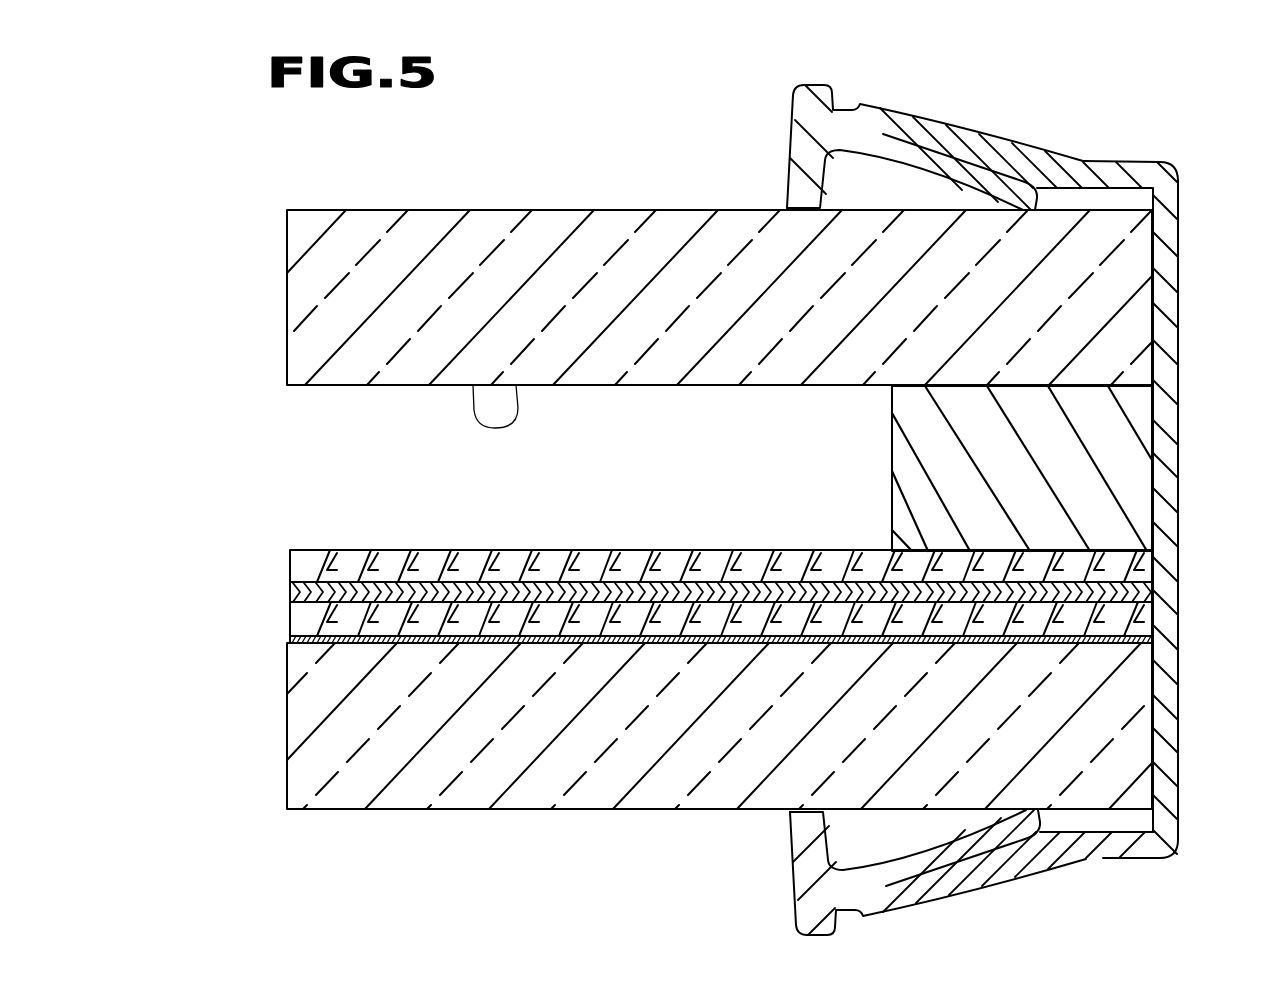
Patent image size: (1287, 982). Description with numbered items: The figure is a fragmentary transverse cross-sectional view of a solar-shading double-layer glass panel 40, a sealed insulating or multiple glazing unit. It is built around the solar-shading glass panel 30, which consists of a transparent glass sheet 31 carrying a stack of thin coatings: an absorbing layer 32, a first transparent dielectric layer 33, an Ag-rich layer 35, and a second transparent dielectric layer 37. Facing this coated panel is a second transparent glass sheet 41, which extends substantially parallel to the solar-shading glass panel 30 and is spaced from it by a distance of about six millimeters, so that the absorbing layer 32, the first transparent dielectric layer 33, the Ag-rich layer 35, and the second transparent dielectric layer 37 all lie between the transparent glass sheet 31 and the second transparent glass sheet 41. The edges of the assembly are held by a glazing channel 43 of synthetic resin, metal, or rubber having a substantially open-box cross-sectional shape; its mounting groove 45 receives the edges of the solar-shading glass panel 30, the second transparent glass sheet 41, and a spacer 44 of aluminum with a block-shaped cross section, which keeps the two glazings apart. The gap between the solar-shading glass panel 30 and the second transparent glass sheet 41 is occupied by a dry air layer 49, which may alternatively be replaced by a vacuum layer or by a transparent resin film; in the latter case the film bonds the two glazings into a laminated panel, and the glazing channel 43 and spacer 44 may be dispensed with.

The solar-shading glass panel 30 is at (679, 818).
The transparent glass sheet 31 is at (600, 778).
The absorbing layer 32 is at (290, 645).
The first transparent dielectric layer 33 is at (292, 626).
The Ag-rich layer 35 is at (292, 594).
The second transparent dielectric layer 37 is at (362, 555).
The solar-shading double-layer glass panel 40 is at (572, 200).
The second transparent glass sheet 41 is at (400, 252).
The glazing channel 43 is at (1172, 216).
The spacer 44 is at (1063, 420).
The mounting groove 45 is at (1170, 752).
The dry air layer 49 is at (512, 385).